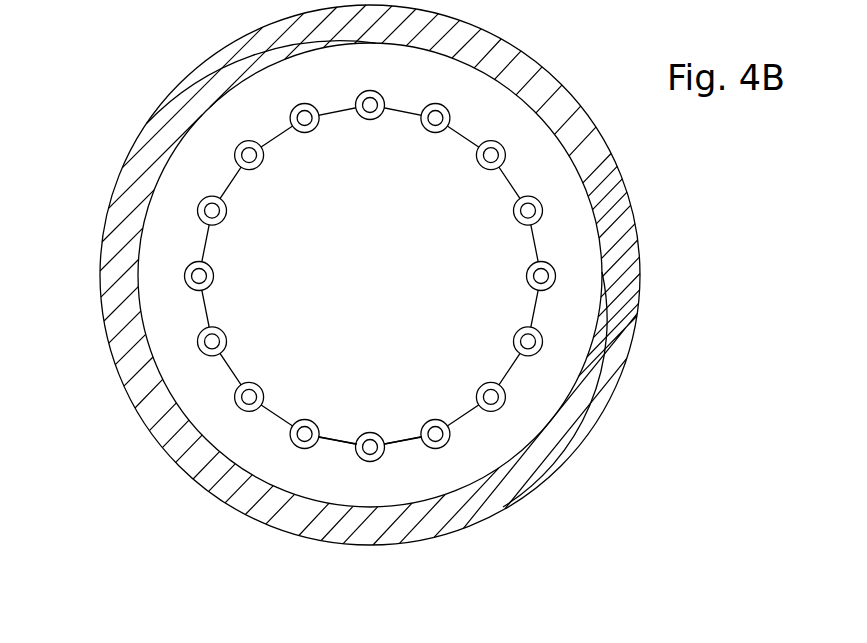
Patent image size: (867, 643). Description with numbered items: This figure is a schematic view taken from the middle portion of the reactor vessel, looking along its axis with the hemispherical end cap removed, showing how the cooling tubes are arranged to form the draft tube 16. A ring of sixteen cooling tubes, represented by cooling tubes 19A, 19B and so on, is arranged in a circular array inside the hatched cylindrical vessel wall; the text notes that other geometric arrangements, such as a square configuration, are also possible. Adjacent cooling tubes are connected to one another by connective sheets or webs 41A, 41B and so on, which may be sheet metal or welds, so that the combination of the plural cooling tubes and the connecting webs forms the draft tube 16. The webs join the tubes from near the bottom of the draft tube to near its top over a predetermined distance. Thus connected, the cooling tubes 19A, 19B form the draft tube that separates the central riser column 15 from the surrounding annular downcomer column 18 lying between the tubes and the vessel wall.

The riser column 15 is at (262, 255).
The draft tube 16 is at (228, 147).
The downcomer column 18 is at (563, 363).
The cooling tube 19A is at (546, 339).
The cooling tube 19B is at (557, 276).
The connective sheet or web 41A is at (335, 445).
The connective sheet or web 41B is at (400, 443).